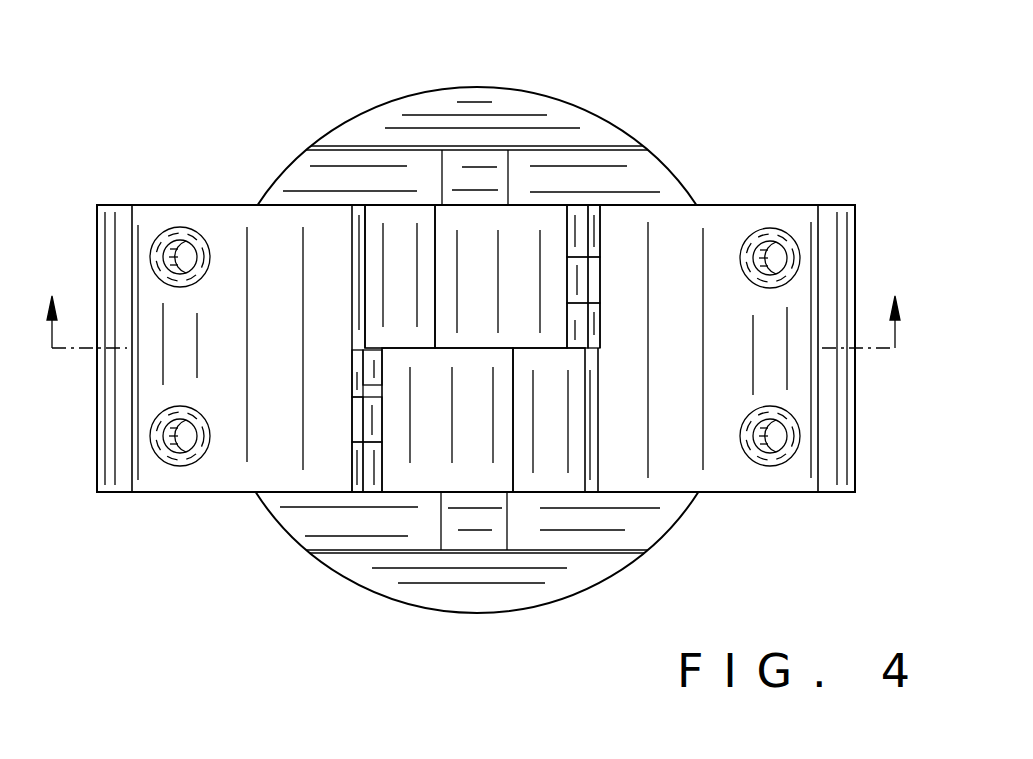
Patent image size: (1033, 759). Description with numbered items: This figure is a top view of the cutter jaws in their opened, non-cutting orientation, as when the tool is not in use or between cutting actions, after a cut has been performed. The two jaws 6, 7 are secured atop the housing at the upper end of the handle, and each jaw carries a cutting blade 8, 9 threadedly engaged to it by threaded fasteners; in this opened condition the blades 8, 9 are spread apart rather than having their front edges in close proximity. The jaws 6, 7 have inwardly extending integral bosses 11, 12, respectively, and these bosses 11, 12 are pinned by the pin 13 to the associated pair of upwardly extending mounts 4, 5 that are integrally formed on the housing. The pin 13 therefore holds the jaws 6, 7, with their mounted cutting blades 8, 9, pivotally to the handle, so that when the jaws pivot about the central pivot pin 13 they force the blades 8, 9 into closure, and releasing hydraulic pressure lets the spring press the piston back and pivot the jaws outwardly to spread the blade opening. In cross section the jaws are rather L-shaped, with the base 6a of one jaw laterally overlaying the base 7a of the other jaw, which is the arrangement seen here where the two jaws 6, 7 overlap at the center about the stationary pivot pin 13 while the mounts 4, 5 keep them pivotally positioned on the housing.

The mount 4 is at (323, 177).
The mount 5 is at (313, 525).
The jaw 6 is at (115, 229).
The base of jaw 6a is at (433, 293).
The jaw 7 is at (838, 230).
The base of jaw 7a is at (513, 420).
The cutting blade 8 is at (728, 477).
The cutting blade 9 is at (218, 463).
The boss 11 is at (397, 227).
The boss 12 is at (557, 472).
The pin 13 is at (482, 175).